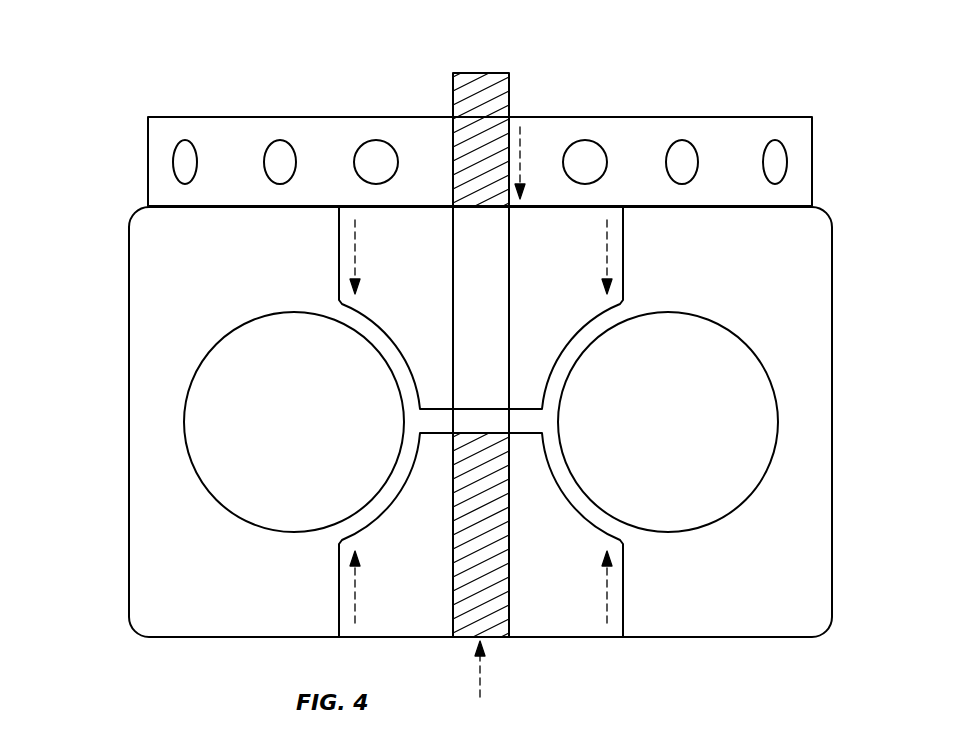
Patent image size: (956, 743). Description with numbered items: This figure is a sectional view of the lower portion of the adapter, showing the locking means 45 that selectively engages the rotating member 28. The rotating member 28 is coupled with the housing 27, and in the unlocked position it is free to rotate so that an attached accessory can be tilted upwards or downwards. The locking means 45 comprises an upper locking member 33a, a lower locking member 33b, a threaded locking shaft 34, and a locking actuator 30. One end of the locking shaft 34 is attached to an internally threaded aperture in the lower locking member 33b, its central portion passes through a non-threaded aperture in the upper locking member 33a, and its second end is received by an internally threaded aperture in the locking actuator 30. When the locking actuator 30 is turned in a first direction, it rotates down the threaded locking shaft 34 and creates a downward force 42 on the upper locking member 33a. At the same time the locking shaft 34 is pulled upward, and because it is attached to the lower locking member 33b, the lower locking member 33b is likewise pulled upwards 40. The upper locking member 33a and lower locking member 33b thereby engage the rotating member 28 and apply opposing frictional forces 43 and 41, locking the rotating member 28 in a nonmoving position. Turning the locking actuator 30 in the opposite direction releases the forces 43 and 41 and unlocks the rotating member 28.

The housing 27 is at (817, 248).
The rotating member 28 is at (249, 357).
The locking actuator 30 is at (770, 128).
The upper locking member 33a is at (578, 238).
The lower locking member 33b is at (565, 625).
The locking shaft 34 is at (510, 91).
The upward pull on lower locking member 40 is at (482, 687).
The frictional locking force from lower locking member 41 is at (356, 606).
The downward force on upper locking member 42 is at (521, 165).
The frictional locking force from upper locking member 43 is at (356, 257).
The locking means 45 is at (118, 168).